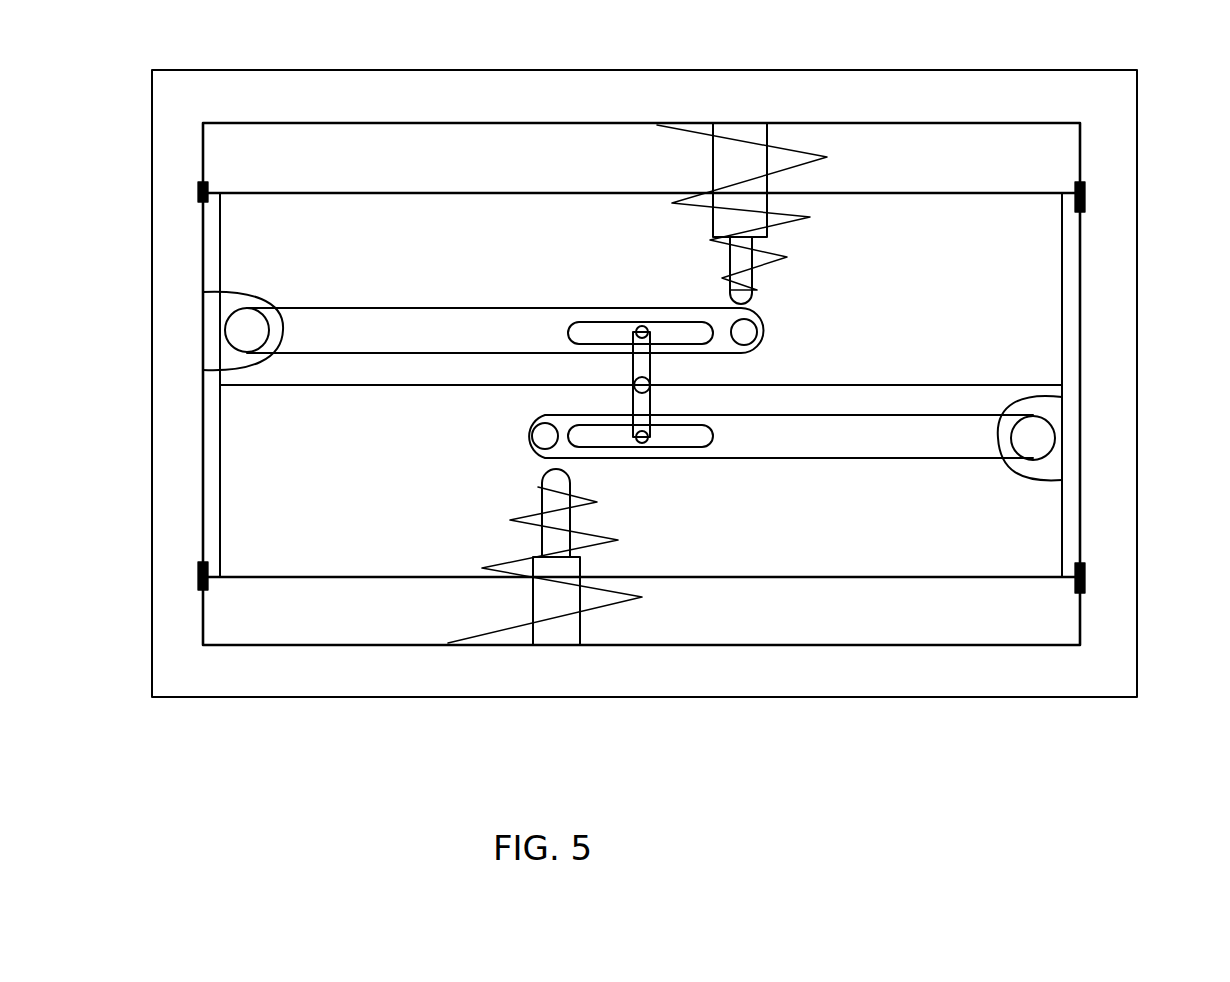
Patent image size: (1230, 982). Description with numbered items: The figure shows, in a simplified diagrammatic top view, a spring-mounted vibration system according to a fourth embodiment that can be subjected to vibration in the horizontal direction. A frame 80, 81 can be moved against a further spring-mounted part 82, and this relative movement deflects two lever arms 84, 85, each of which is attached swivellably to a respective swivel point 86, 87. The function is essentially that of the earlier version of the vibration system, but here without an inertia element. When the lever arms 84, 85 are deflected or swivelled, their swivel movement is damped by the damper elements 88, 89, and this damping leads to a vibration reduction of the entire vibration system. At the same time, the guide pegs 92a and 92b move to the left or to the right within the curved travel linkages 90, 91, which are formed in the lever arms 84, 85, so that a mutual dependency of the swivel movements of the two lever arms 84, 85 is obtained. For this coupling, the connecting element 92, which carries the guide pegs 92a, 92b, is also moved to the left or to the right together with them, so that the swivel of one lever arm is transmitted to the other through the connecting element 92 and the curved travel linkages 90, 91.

The frame 80 is at (1137, 237).
The frame 81 is at (1080, 283).
The further spring-mounted part 82 is at (1062, 333).
The lever arm 84 is at (383, 323).
The lever arm 85 is at (843, 440).
The swivel point 86 is at (237, 322).
The swivel point 87 is at (1037, 437).
The damper element 88 is at (740, 205).
The damper element 89 is at (560, 590).
The curved travel linkage 90 is at (592, 332).
The curved travel linkage 91 is at (687, 432).
The connecting element 92 is at (643, 363).
The guide peg 92a is at (643, 328).
The guide peg 92b is at (642, 445).